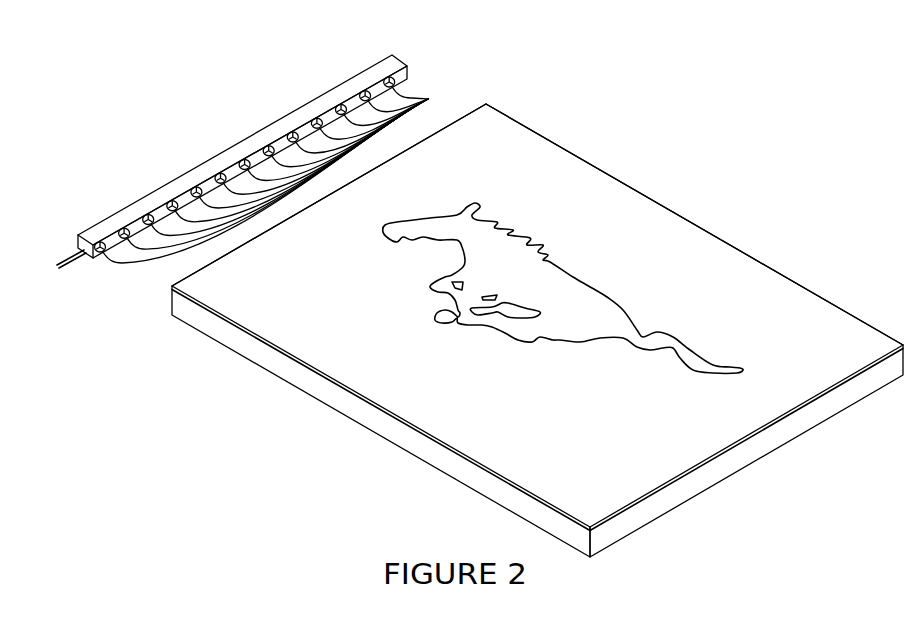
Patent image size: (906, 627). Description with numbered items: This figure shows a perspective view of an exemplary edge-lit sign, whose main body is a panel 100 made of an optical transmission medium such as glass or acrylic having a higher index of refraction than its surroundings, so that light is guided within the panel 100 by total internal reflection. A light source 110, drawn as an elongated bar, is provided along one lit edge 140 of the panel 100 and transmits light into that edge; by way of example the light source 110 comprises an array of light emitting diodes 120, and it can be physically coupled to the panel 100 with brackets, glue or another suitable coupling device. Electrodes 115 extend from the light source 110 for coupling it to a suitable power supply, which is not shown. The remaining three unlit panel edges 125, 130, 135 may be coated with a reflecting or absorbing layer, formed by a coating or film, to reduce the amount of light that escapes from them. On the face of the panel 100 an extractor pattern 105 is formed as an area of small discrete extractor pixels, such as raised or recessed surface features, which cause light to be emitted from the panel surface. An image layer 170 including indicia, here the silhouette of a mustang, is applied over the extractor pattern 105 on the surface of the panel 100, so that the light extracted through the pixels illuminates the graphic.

The edge-lit sign panel 100 is at (608, 193).
The extractor pattern 105 is at (592, 297).
The light source 110 is at (242, 148).
The electrodes 115 is at (72, 260).
The light emitting diodes 120 is at (275, 170).
The unlit panel edge 125 is at (762, 263).
The unlit panel edge 130 is at (728, 453).
The unlit panel edge 135 is at (312, 378).
The lit edge 140 is at (447, 132).
The image layer 170 is at (843, 380).